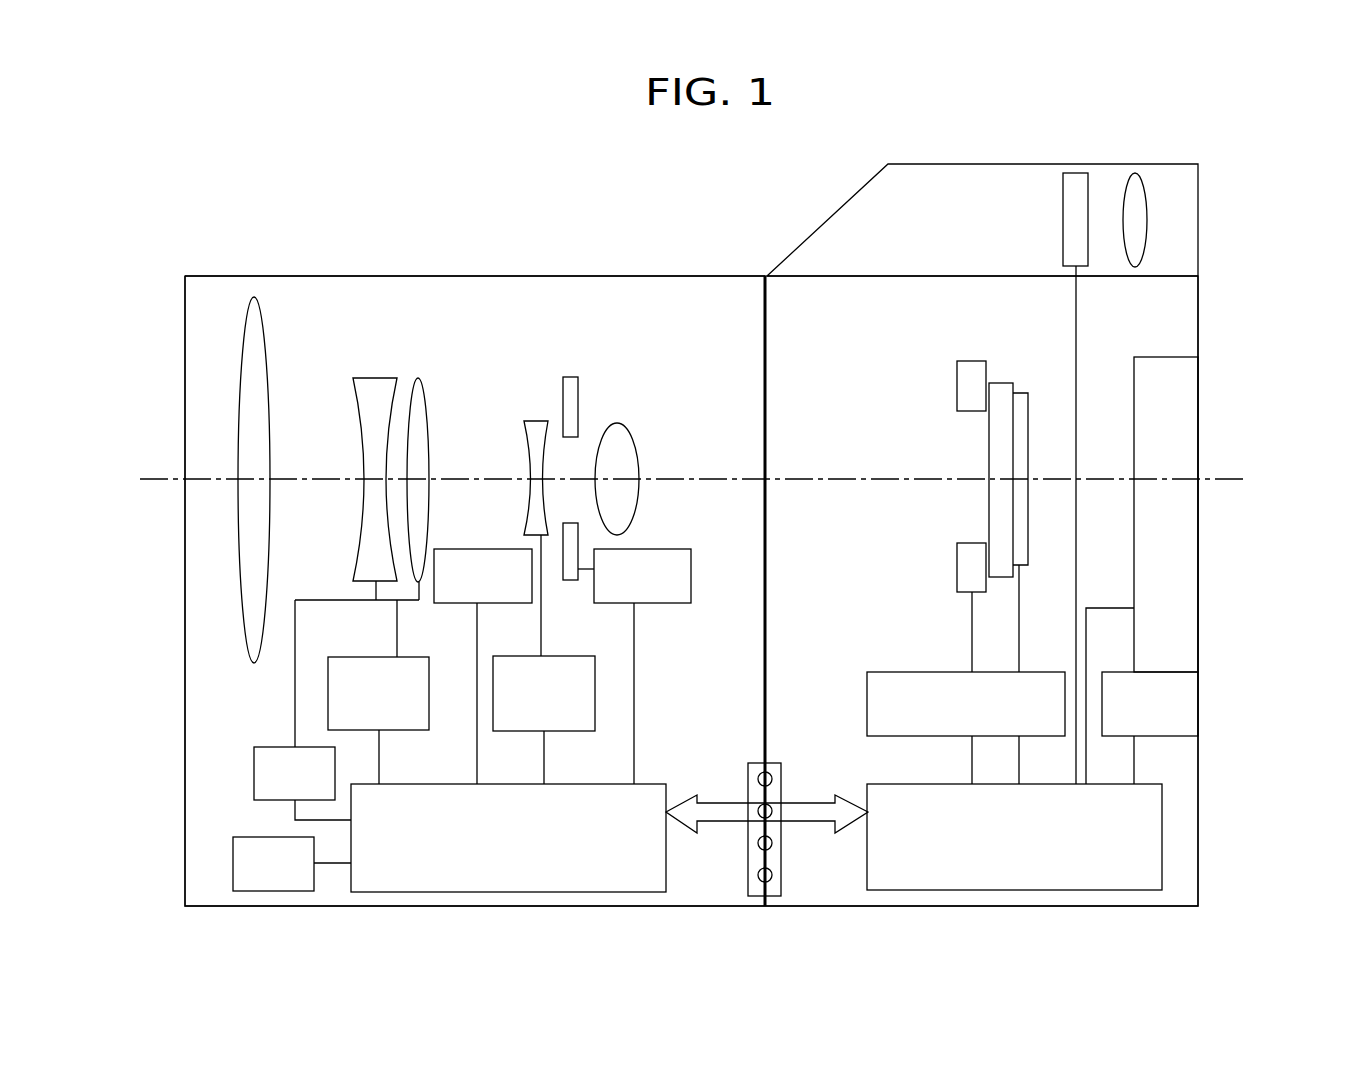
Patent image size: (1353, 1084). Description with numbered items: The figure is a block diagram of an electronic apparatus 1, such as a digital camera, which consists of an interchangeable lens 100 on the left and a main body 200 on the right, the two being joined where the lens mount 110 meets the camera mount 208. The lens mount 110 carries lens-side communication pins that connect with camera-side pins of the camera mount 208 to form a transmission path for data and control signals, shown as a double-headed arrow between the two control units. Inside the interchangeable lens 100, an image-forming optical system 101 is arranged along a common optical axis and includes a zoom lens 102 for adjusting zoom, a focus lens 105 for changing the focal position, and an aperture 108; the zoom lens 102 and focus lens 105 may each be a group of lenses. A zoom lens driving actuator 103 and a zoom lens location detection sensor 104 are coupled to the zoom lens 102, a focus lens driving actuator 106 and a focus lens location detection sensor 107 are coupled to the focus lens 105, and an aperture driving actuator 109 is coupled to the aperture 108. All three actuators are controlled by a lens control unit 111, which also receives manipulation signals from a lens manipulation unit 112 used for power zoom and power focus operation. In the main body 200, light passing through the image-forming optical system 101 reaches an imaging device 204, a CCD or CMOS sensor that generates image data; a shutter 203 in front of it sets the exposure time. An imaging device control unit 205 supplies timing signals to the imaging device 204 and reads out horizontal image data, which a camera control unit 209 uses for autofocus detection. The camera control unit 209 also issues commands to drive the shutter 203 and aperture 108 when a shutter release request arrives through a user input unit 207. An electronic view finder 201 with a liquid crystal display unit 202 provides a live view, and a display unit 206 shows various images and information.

The electronic apparatus 1 is at (192, 200).
The interchangeable lens 100 is at (508, 268).
The image-forming optical system 101 is at (685, 317).
The zoom lens 102 is at (376, 378).
The zoom lens driving actuator 103 is at (285, 747).
The zoom lens location detection sensor 104 is at (407, 657).
The focus lens 105 is at (537, 421).
The focus lens driving actuator 106 is at (488, 549).
The focus lens location detection sensor 107 is at (558, 656).
The aperture 108 is at (573, 377).
The aperture driving actuator 109 is at (668, 549).
The lens mount 110 is at (757, 763).
The lens control unit 111 is at (558, 784).
The lens manipulation unit 112 is at (262, 837).
The main body 200 is at (1211, 200).
The electronic view finder 201 is at (1152, 164).
The liquid crystal display unit 202 is at (1076, 173).
The shutter 203 is at (957, 383).
The imaging device 204 is at (1003, 383).
The imaging device control unit 205 is at (912, 672).
The display unit 206 is at (1172, 357).
The user input unit 207 is at (1172, 672).
The camera mount 208 is at (773, 763).
The camera control unit 209 is at (1162, 845).